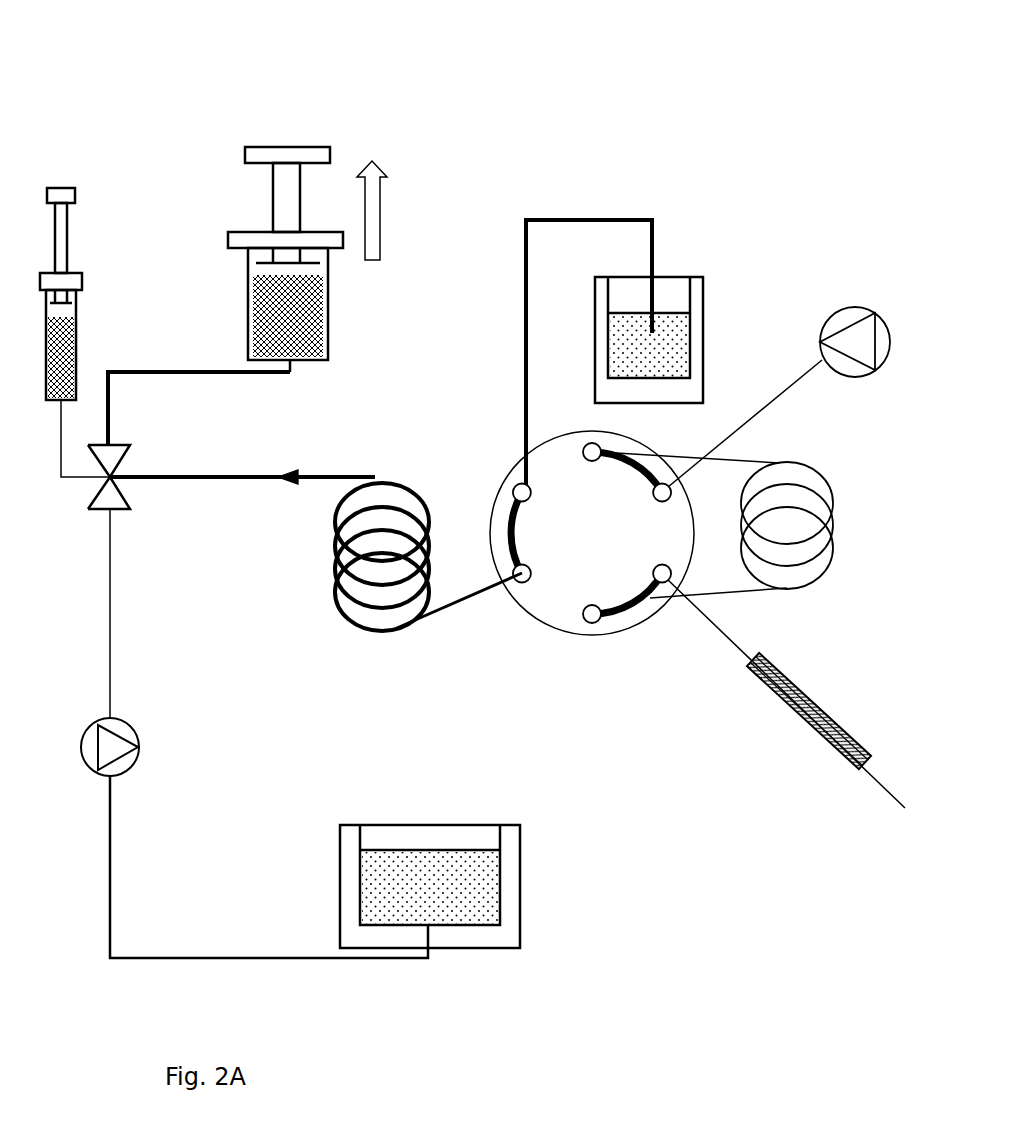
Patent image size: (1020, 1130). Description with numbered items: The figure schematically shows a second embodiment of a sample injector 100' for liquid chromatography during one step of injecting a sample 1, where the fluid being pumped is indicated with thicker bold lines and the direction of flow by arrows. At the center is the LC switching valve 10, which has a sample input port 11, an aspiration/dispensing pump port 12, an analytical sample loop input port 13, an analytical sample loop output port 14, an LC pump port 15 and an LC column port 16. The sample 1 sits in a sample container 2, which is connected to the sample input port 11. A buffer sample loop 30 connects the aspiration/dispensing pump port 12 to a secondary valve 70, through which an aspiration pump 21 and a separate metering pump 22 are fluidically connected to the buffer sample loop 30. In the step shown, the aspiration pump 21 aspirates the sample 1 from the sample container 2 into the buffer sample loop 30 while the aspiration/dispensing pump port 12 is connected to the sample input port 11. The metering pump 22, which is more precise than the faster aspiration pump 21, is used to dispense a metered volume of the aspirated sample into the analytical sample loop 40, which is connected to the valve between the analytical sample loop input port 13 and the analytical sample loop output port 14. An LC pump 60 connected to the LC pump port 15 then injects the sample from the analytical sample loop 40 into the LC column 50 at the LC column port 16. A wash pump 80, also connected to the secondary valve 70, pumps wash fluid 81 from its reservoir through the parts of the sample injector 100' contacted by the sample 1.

The sample injector 100' is at (210, 56).
The sample 1 is at (665, 325).
The sample container 2 is at (705, 293).
The LC switching valve 10 is at (553, 632).
The sample input port 11 is at (518, 486).
The aspiration/dispensing pump port 12 is at (511, 600).
The analytical sample loop input port 13 is at (588, 622).
The analytical sample loop output port 14 is at (588, 442).
The LC pump port 15 is at (657, 494).
The LC column port 16 is at (657, 568).
The aspiration pump 21 is at (330, 332).
The metering pump 22 is at (75, 348).
The buffer sample loop 30 is at (394, 480).
The analytical sample loop 40 is at (830, 480).
The LC column 50 is at (802, 718).
The LC pump 60 is at (852, 307).
The secondary valve 70 is at (135, 443).
The wash pump 80 is at (140, 723).
The wash fluid 81 is at (412, 865).